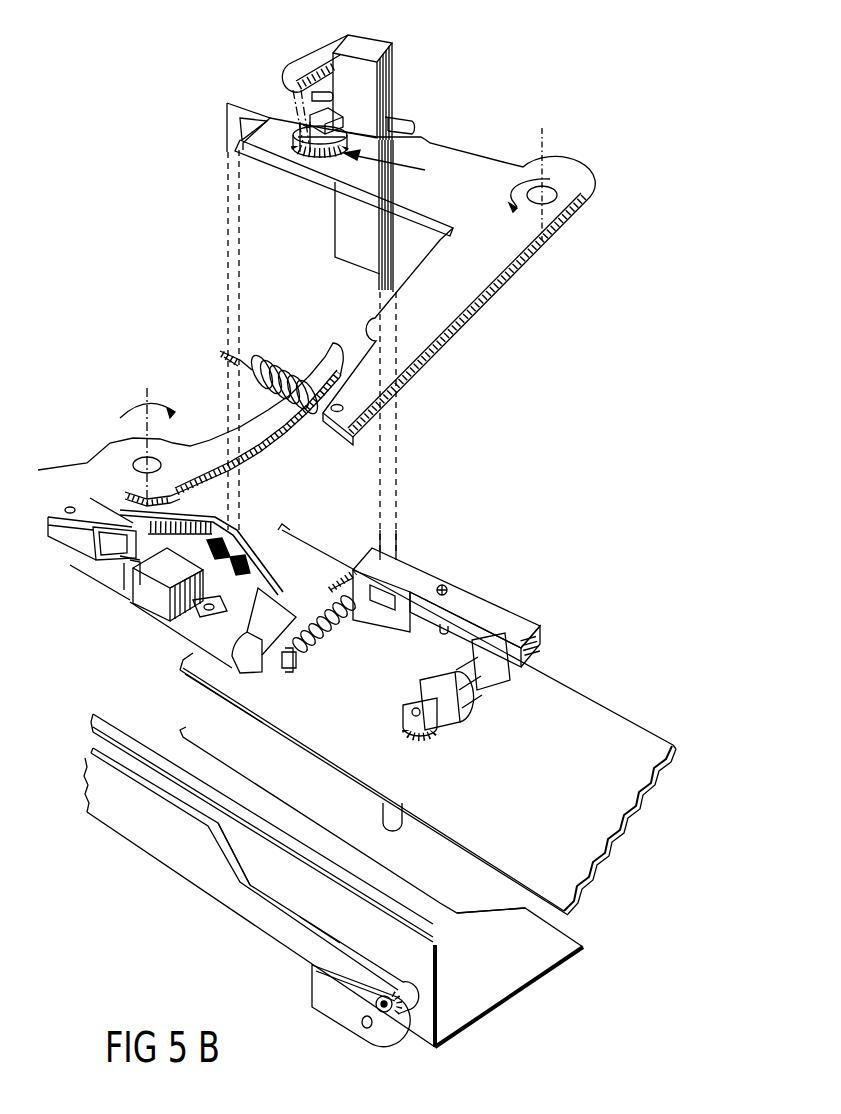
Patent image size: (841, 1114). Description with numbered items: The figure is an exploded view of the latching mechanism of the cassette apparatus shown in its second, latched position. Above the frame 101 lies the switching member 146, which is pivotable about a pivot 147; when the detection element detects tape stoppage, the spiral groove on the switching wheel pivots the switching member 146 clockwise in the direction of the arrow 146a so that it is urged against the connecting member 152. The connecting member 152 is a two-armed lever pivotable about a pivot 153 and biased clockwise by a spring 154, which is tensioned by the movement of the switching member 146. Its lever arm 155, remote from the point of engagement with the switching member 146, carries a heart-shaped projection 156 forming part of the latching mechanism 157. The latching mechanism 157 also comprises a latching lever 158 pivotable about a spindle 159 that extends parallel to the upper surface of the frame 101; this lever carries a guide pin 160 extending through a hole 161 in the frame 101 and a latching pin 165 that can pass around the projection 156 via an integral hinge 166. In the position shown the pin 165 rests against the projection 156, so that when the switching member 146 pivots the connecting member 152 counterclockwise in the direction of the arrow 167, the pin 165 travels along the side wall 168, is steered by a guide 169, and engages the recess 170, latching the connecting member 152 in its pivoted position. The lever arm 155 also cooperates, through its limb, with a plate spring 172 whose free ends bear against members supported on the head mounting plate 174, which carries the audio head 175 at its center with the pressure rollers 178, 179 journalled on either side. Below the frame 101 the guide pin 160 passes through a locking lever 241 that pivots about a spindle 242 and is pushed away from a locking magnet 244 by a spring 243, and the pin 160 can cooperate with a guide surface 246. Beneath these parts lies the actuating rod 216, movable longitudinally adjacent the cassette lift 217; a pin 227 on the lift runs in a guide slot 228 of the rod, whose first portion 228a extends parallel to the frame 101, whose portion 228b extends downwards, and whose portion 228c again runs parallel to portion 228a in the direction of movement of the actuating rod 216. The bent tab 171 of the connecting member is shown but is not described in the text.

The frame 101 is at (610, 725).
The switching member 146 is at (242, 446).
The arrow indicating clockwise pivoting of switching member 146a is at (166, 412).
The pivot 147 is at (145, 391).
The connecting member 152 is at (408, 376).
The pivot 153 is at (546, 138).
The spring 154 is at (281, 360).
The lever arm 155 is at (262, 98).
The heart-shaped projection 156 is at (292, 140).
The latching mechanism 157 is at (399, 166).
The latching lever 158 is at (386, 64).
The spindle 159 is at (398, 116).
The guide pin 160 is at (380, 283).
The hole 161 is at (372, 625).
The latching pin 165 is at (282, 97).
The integral hinge 166 is at (338, 40).
The arrow indicating counterclockwise pivoting of connecting member 167 is at (517, 182).
The side wall 168 is at (318, 152).
The guide 169 is at (330, 112).
The recess 170 is at (305, 127).
The bent tab 171 is at (233, 130).
The plate spring 172 is at (238, 524).
The head mounting plate 174 is at (192, 627).
The audio head 175 is at (148, 586).
The pressure roller 178 is at (253, 650).
The pressure roller 179 is at (63, 540).
The actuating rod 216 is at (498, 980).
The cassette lift 217 is at (335, 1004).
The pin 227 is at (400, 1016).
The guide slot 228 is at (280, 907).
The first portion of guide slot 228a is at (170, 790).
The second portion of guide slot 228b is at (237, 865).
The third portion of guide slot 228c is at (340, 940).
The locking lever 241 is at (480, 600).
The spindle 242 is at (447, 586).
The spring 243 is at (320, 636).
The locking magnet 244 is at (470, 692).
The guide surface 246 is at (486, 910).